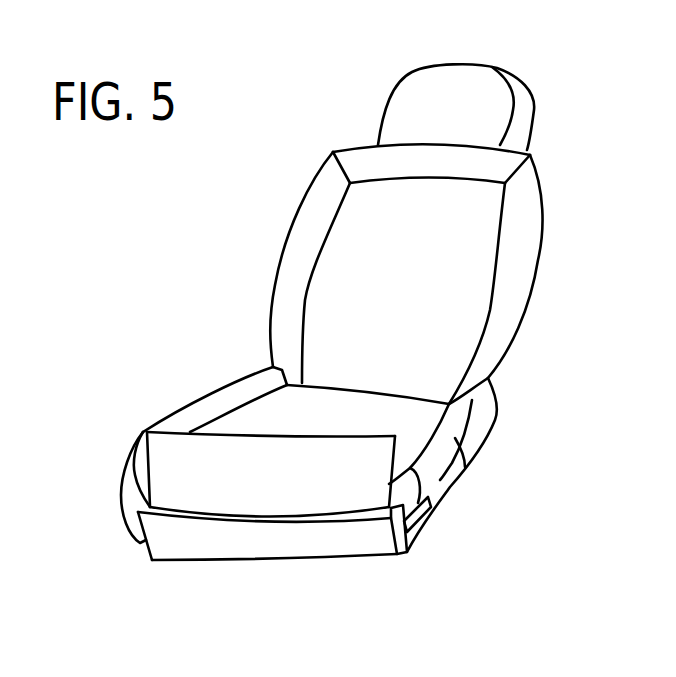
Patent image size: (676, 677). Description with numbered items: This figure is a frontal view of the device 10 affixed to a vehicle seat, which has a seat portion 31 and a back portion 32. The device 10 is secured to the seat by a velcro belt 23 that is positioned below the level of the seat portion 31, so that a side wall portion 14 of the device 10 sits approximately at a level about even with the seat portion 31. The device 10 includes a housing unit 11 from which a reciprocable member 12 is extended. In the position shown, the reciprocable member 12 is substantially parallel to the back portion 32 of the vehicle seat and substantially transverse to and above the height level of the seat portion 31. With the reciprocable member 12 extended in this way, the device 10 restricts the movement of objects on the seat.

The device 10 is at (133, 567).
The housing unit 11 is at (363, 558).
The reciprocable member 12 is at (145, 431).
The side wall portion 14 is at (136, 507).
The velcro belt 23 is at (416, 512).
The seat portion 31 is at (428, 423).
The back portion 32 is at (475, 252).